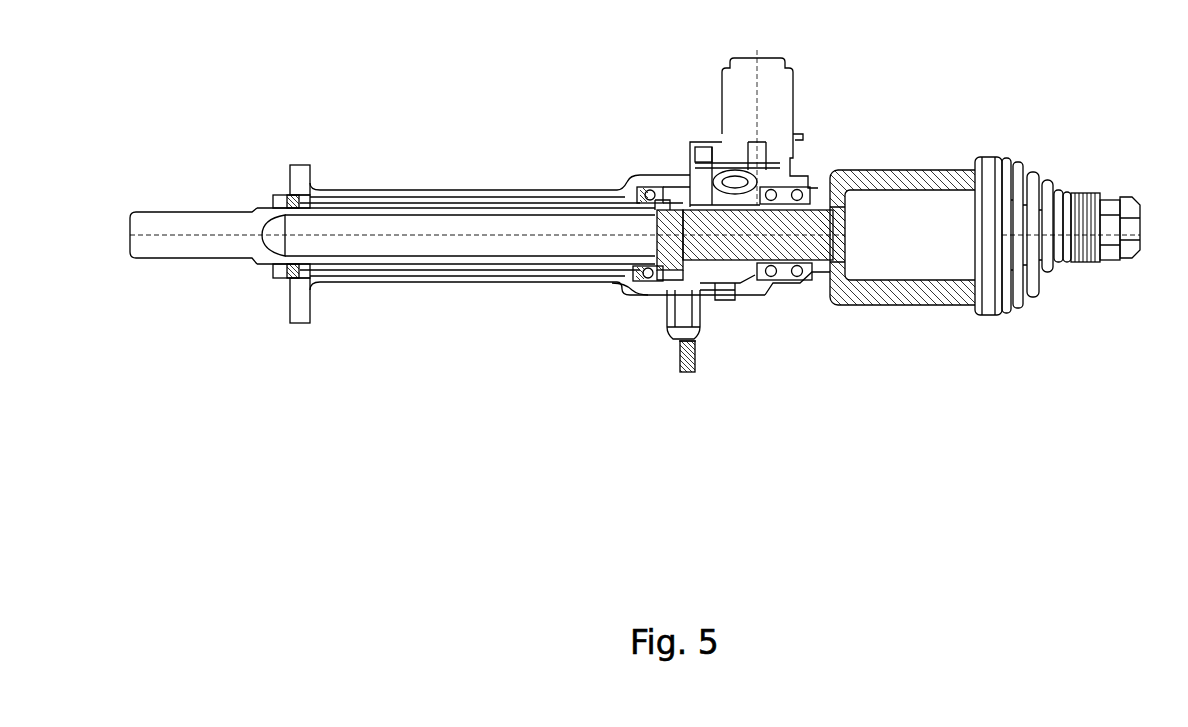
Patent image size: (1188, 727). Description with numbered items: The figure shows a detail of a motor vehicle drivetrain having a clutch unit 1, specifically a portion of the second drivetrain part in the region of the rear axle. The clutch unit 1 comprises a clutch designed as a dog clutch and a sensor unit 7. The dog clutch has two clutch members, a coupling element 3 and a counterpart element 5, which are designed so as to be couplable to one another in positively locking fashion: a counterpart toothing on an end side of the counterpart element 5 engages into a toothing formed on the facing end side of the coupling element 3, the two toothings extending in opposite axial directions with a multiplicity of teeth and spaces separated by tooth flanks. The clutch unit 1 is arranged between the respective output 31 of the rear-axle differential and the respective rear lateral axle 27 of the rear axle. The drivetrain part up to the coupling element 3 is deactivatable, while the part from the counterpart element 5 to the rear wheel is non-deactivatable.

The clutch unit 1 is at (660, 315).
The coupling element 3 is at (678, 193).
The counterpart element 5 is at (700, 180).
The sensor unit 7 is at (680, 312).
The rear lateral axle 27 is at (930, 183).
The output 31 is at (497, 190).